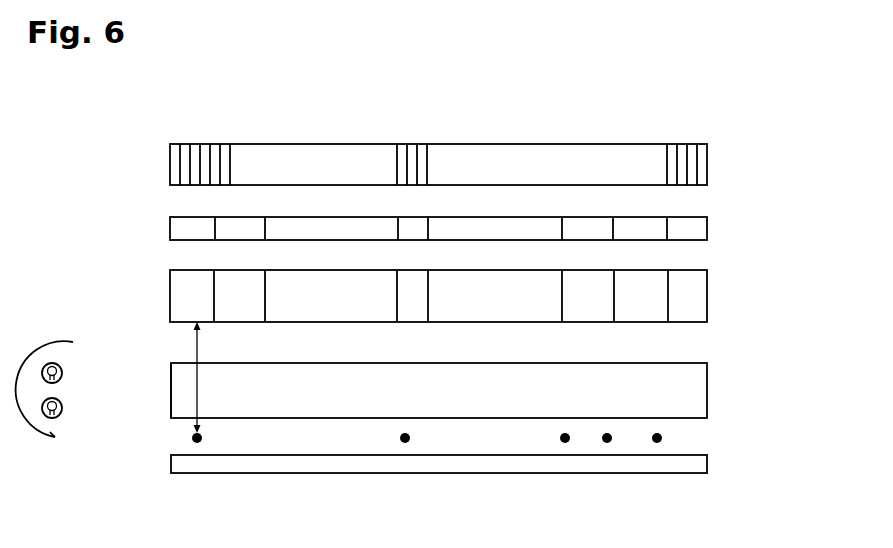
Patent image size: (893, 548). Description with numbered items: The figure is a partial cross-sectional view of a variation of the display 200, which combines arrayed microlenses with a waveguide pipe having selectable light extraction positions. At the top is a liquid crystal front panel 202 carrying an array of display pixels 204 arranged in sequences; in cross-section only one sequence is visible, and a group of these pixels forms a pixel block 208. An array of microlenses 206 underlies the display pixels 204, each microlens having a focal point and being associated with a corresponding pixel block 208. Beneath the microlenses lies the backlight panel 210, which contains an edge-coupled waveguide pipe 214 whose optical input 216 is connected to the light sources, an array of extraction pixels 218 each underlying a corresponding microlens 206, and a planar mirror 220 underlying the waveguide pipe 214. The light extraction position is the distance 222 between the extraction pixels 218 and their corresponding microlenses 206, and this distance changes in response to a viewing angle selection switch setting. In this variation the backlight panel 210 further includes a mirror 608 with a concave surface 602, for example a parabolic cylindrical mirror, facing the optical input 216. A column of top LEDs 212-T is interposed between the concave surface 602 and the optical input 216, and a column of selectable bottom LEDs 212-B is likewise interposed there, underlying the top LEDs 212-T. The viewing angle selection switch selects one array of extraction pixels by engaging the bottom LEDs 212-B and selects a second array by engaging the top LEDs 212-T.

The display 200 is at (172, 106).
The front panel 202 is at (708, 165).
The display pixels 204 is at (680, 145).
The microlenses 206 is at (412, 225).
The pixel block 208 is at (428, 142).
The backlight panel 210 is at (698, 477).
The top LEDs 212-T is at (63, 373).
The bottom LEDs 212-B is at (63, 409).
The waveguide pipe 214 is at (439, 390).
The optical input 216 is at (163, 372).
The extraction pixel 218 is at (190, 281).
The planar mirror 220 is at (555, 475).
The distance 222 is at (201, 355).
The concave surface 602 is at (67, 433).
The mirror 608 is at (47, 438).